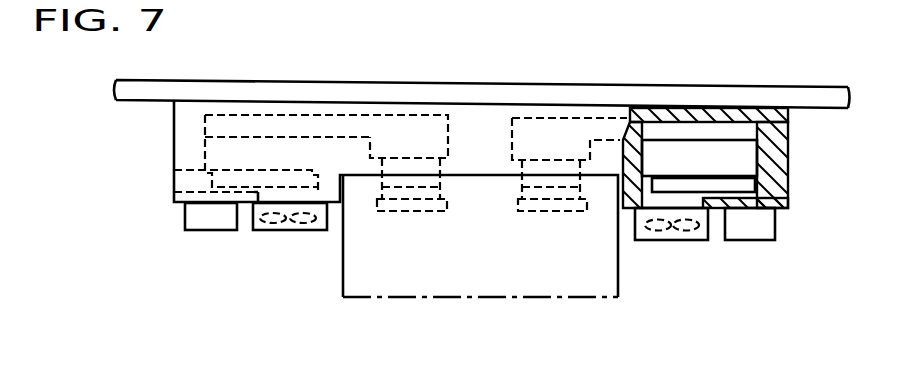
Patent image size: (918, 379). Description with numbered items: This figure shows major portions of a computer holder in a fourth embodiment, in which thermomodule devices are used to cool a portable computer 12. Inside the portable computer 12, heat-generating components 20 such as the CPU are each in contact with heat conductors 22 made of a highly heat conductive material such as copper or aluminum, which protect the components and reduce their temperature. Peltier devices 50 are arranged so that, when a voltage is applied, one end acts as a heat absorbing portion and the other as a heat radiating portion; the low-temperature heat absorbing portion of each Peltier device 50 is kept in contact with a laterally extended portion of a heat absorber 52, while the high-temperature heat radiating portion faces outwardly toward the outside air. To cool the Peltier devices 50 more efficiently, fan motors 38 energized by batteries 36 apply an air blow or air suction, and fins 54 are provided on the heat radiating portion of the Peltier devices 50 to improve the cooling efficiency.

The portable computer 12 is at (510, 270).
The heat-generating components 20 is at (437, 212).
The heat conductors 22 is at (393, 211).
The batteries 36 is at (213, 217).
The fan motors 38 is at (318, 220).
The Peltier devices 50 is at (247, 152).
The heat absorber 52 is at (380, 126).
The fins 54 is at (247, 182).